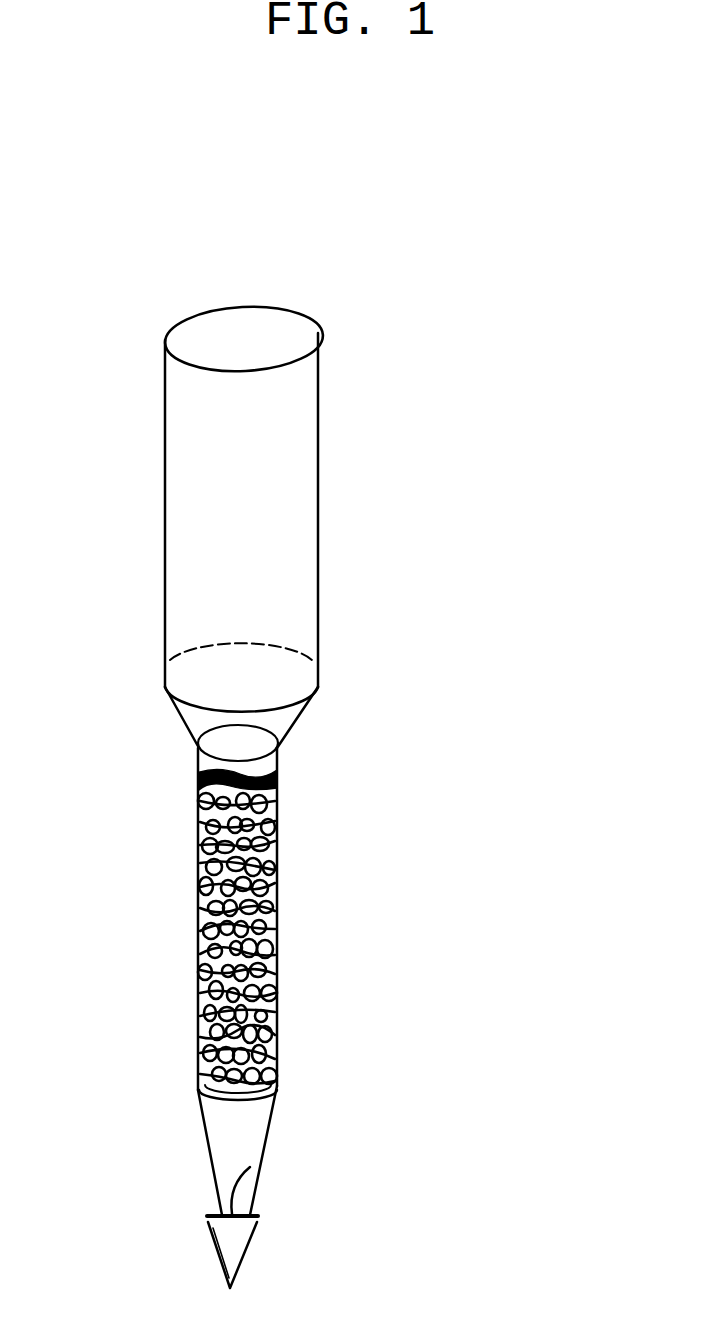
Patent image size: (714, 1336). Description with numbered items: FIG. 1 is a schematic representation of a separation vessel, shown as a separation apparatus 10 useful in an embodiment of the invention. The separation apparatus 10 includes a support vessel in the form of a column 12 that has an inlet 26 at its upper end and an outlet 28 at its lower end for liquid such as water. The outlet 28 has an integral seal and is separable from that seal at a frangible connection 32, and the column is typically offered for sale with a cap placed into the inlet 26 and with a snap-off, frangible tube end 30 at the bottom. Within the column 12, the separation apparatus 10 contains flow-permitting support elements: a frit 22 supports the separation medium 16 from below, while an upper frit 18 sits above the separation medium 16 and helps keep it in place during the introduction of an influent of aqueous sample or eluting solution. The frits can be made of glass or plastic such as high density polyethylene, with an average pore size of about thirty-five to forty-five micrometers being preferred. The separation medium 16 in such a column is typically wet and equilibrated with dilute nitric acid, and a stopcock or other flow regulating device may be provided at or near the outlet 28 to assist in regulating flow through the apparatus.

The separation apparatus 10 is at (423, 645).
The column 12 is at (322, 432).
The inlet 26 is at (290, 350).
The upper frit 18 is at (279, 772).
The separation medium 16 is at (265, 980).
The frit 22 is at (260, 1075).
The frangible connection 32 is at (212, 1215).
The outlet 28 is at (250, 1167).
The snap-off tube end 30 is at (217, 1270).